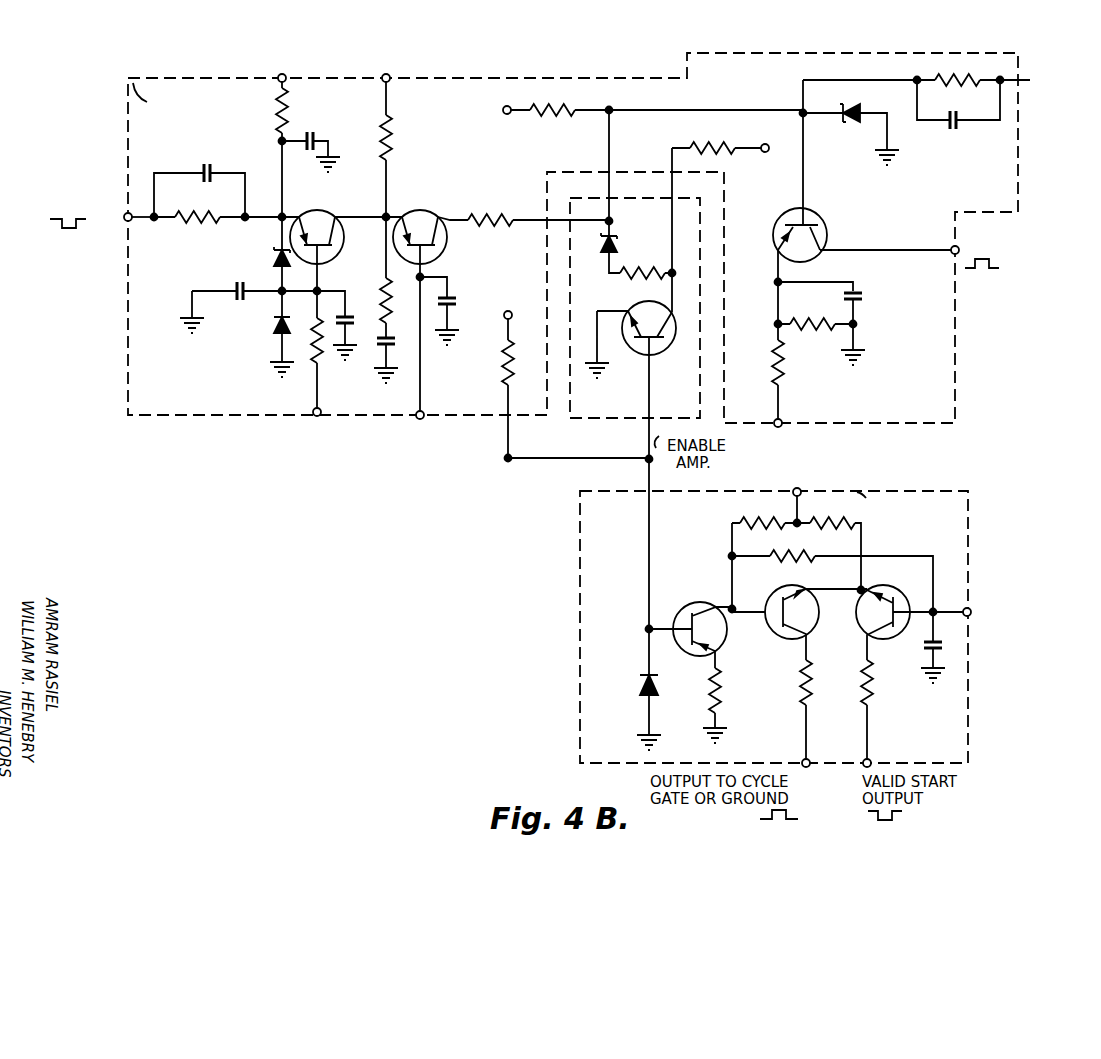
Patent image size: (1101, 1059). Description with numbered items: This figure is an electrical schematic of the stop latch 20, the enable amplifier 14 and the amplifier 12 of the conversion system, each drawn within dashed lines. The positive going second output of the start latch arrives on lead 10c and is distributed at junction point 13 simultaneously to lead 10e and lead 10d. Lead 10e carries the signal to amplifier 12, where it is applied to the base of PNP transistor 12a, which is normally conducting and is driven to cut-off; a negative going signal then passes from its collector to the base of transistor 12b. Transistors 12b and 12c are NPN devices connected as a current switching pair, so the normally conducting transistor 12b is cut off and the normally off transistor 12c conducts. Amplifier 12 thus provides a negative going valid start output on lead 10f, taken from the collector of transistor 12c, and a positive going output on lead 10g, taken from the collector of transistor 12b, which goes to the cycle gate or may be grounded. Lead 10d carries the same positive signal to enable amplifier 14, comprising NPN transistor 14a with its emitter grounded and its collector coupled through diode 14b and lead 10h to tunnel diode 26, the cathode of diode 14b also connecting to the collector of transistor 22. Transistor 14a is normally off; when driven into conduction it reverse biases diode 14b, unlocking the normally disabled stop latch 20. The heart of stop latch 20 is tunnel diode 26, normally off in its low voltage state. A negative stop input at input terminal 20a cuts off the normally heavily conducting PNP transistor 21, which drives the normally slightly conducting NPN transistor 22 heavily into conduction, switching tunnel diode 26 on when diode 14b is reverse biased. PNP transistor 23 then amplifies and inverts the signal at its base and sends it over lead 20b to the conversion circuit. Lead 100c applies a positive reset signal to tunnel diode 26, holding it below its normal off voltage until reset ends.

The stop latch 20 is at (130, 355).
The input terminal 20a is at (140, 223).
The lead 20b is at (948, 249).
The transistor 21 is at (322, 222).
The transistor 22 is at (426, 222).
The transistor 23 is at (820, 233).
The tunnel diode 26 is at (857, 116).
The lead 100c is at (1026, 82).
The lead 10h is at (614, 136).
The enable amplifier 14 is at (584, 419).
The transistor 14a is at (639, 313).
The diode 14b is at (618, 254).
The lead 10d is at (652, 410).
The junction point 13 is at (654, 463).
The lead 10c is at (506, 468).
The amplifier 12 is at (582, 557).
The transistor 12a is at (686, 613).
The transistor 12b is at (774, 604).
The transistor 12c is at (884, 589).
The lead 10e is at (651, 535).
The lead 10g is at (809, 736).
The lead 10f is at (870, 736).